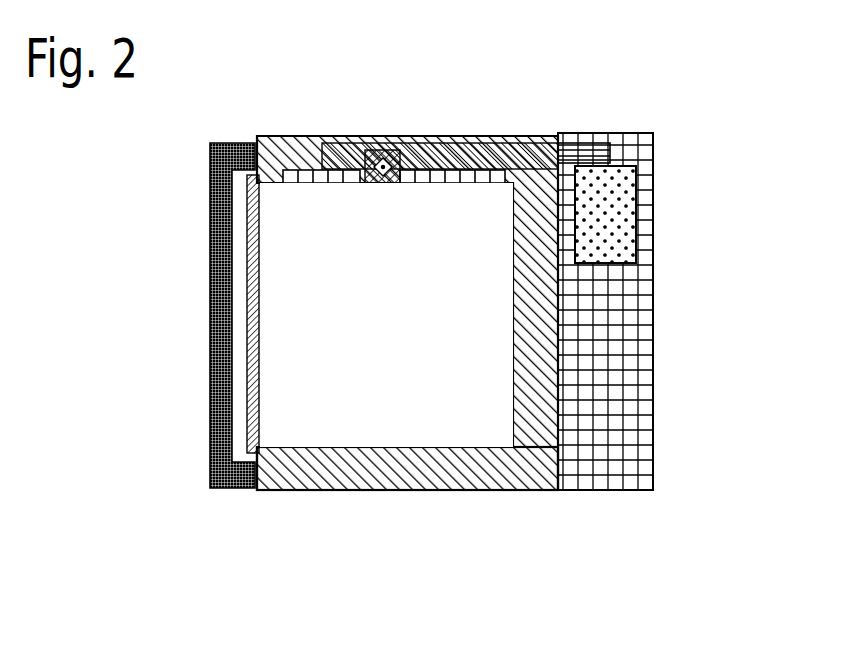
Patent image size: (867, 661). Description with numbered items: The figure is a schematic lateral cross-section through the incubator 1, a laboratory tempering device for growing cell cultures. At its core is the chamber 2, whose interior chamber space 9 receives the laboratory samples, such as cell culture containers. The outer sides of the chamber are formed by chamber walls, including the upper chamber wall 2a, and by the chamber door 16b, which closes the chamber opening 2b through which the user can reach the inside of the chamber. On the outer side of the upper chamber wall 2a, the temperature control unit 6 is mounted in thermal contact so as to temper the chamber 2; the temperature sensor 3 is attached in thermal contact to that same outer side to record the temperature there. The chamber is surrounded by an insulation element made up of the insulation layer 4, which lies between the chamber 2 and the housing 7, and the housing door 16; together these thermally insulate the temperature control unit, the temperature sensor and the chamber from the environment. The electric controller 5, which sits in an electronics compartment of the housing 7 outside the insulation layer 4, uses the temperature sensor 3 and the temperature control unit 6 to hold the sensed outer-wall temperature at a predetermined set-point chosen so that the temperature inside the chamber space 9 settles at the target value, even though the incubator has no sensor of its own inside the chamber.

The incubator 1 is at (676, 111).
The chamber 2 is at (373, 438).
The upper chamber wall 2a is at (228, 157).
The chamber opening 2b is at (267, 427).
The temperature sensor 3 is at (356, 162).
The insulation layer 4 is at (210, 445).
The electric controller 5 is at (620, 223).
The temperature control unit 6 is at (306, 156).
The housing 7 is at (520, 490).
The chamber space 9 is at (450, 290).
The housing door 16 is at (210, 392).
The chamber door 16b is at (248, 288).